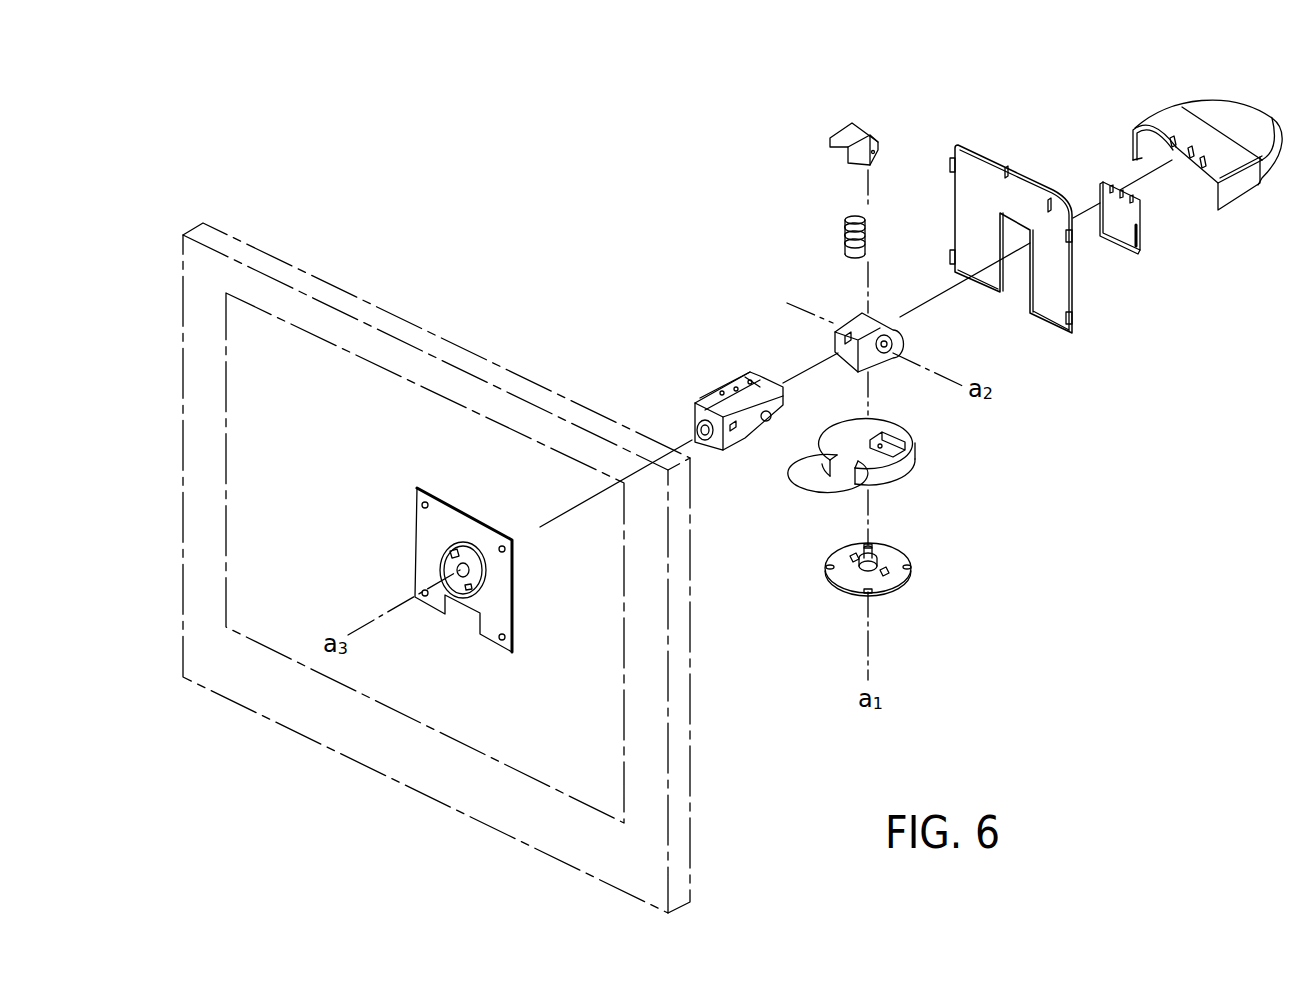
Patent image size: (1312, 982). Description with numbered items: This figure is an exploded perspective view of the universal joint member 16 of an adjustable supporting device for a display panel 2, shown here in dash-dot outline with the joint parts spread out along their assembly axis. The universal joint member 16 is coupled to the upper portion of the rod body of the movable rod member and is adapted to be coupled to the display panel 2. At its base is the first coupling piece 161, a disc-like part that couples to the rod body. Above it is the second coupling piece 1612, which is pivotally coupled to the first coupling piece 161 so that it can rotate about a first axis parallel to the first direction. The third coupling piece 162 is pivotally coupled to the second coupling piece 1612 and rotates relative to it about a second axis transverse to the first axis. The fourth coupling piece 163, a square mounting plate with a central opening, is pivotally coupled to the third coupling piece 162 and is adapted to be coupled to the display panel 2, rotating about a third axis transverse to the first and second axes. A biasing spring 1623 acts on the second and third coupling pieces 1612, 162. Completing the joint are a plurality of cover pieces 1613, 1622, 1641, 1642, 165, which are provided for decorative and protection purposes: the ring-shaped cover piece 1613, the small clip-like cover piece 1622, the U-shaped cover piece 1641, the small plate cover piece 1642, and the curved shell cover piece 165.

The display panel 2 is at (330, 287).
The universal joint member 16 is at (932, 140).
The first coupling piece 161 is at (888, 593).
The second coupling piece 1612 is at (897, 345).
The cover piece 1613 is at (907, 470).
The third coupling piece 162 is at (712, 390).
The cover piece 1622 is at (850, 130).
The biasing spring 1623 is at (845, 227).
The fourth coupling piece 163 is at (422, 542).
The cover piece 1641 is at (1073, 295).
The cover piece 1642 is at (1142, 245).
The cover piece 165 is at (1258, 118).